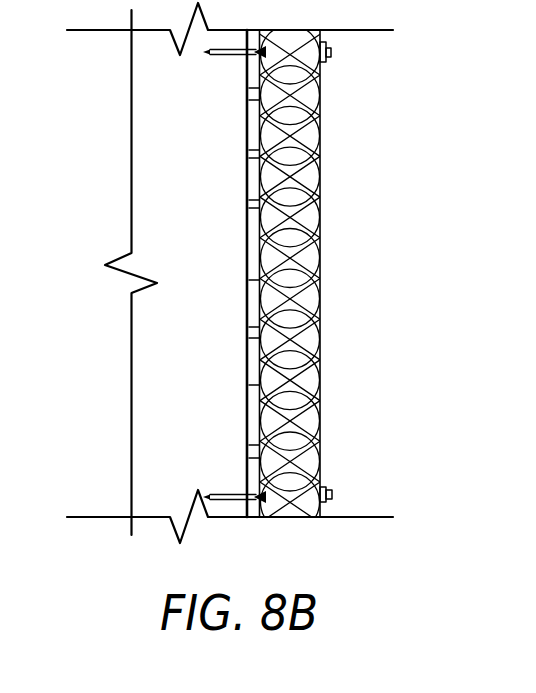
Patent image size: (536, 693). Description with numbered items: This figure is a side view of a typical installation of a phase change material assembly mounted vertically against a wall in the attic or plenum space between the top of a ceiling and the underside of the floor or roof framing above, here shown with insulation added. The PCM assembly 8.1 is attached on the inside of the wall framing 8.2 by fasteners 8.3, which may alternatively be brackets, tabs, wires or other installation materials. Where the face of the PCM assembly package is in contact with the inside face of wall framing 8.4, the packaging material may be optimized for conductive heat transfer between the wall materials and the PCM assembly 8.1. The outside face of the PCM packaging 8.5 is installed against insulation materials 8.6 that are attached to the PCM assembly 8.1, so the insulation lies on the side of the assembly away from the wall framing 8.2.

The PCM assembly 8.1 is at (270, 196).
The wall framing 8.2 is at (171, 360).
The fasteners 8.3 is at (347, 493).
The inside face of wall framing 8.4 is at (233, 160).
The outside face of the PCM packaging 8.5 is at (275, 137).
The insulation materials 8.6 is at (310, 308).